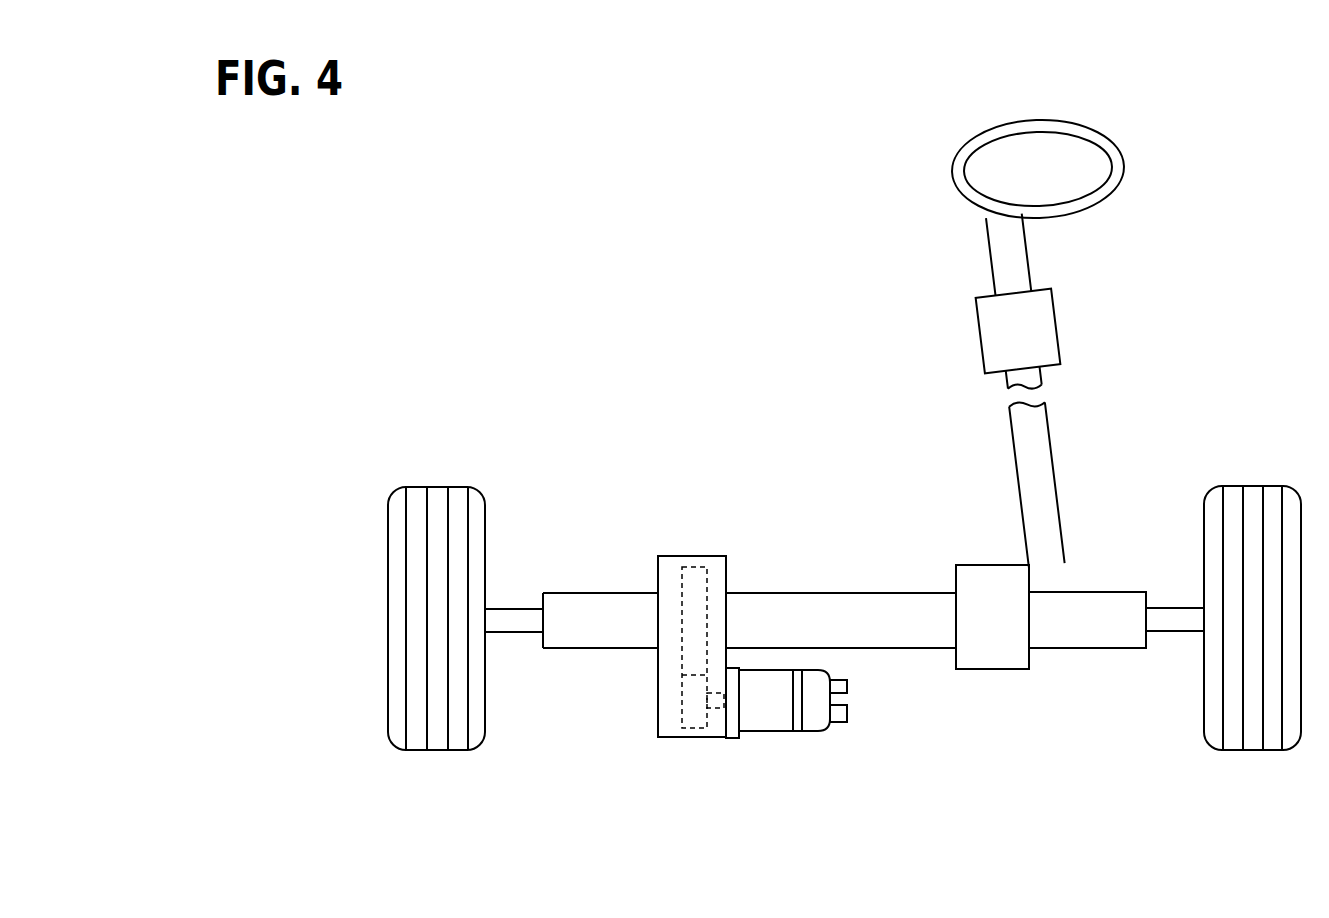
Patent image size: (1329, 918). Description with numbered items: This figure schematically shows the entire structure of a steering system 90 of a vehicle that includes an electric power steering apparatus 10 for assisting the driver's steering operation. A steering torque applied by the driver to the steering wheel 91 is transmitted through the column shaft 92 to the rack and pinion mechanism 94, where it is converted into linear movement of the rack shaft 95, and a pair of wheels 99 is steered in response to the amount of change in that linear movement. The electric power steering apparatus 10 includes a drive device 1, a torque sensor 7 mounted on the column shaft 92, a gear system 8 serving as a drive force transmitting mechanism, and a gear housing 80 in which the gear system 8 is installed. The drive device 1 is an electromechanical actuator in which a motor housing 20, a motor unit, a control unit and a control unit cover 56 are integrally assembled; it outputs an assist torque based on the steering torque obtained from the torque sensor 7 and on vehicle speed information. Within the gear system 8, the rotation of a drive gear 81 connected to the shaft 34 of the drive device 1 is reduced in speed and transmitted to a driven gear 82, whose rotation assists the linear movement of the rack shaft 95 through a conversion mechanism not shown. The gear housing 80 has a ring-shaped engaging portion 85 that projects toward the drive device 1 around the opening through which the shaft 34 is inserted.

The drive device 1 is at (858, 708).
The torque sensor 7 is at (990, 347).
The gear system 8 is at (643, 565).
The electric power steering apparatus 10 is at (800, 822).
The motor housing 20 is at (773, 708).
The shaft 34 is at (717, 700).
The control unit cover 56 is at (813, 700).
The gear housing 80 is at (668, 738).
The drive gear 81 is at (680, 704).
The driven gear 82 is at (690, 664).
The engaging portion 85 is at (733, 735).
The steering system 90 is at (693, 368).
The steering wheel 91 is at (1043, 118).
The column shaft 92 is at (1003, 271).
The rack and pinion mechanism 94 is at (1020, 562).
The rack shaft 95 is at (812, 592).
The wheels 99 is at (440, 487).